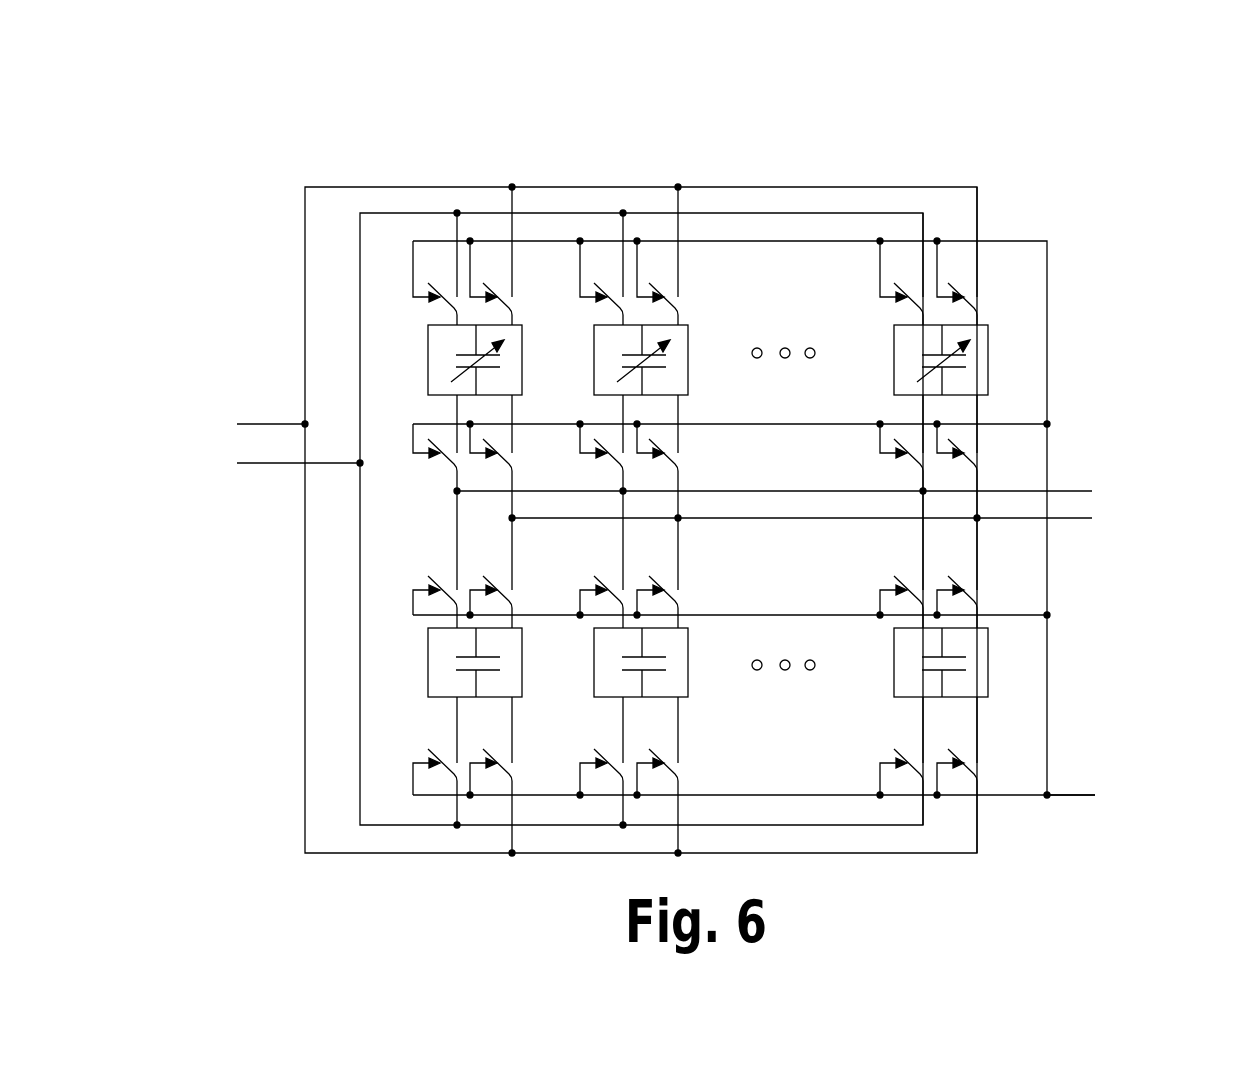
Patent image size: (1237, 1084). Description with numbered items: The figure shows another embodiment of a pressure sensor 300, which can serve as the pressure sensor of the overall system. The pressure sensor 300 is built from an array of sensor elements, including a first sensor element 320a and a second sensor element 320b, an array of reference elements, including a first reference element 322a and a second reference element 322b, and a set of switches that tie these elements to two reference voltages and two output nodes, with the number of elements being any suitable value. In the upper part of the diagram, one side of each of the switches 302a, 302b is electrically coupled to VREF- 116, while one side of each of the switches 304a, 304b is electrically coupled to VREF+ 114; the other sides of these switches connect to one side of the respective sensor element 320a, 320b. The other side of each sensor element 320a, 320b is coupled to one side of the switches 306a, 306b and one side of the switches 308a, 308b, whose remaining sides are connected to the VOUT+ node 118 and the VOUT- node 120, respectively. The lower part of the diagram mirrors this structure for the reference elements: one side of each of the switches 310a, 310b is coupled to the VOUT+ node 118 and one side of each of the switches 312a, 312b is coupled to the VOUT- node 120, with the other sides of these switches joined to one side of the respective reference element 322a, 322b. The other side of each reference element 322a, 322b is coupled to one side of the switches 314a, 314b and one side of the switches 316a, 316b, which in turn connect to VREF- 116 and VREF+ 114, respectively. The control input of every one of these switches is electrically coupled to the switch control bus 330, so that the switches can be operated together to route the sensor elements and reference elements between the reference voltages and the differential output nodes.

The pressure sensor 300 is at (797, 90).
The VREF+ 114 is at (247, 423).
The VREF- 116 is at (247, 465).
The VOUT+ node 118 is at (1077, 490).
The VOUT- node 120 is at (1070, 518).
The switch control bus (SW_CNTL) 330 is at (1063, 798).
The switch 302a is at (440, 306).
The switch 302b is at (607, 306).
The switch 304a is at (528, 299).
The switch 304b is at (695, 299).
The switch 306a is at (446, 467).
The switch 306b is at (612, 467).
The switch 308a is at (511, 469).
The switch 308b is at (677, 469).
The switch 310a is at (439, 578).
The switch 310b is at (606, 578).
The switch 312a is at (510, 596).
The switch 312b is at (676, 596).
The switch 314a is at (447, 739).
The switch 314b is at (608, 758).
The switch 316a is at (513, 767).
The switch 316b is at (680, 767).
The sensor element 320a is at (428, 378).
The sensor element 320b is at (594, 378).
The reference element 322a is at (428, 674).
The reference element 322b is at (594, 657).